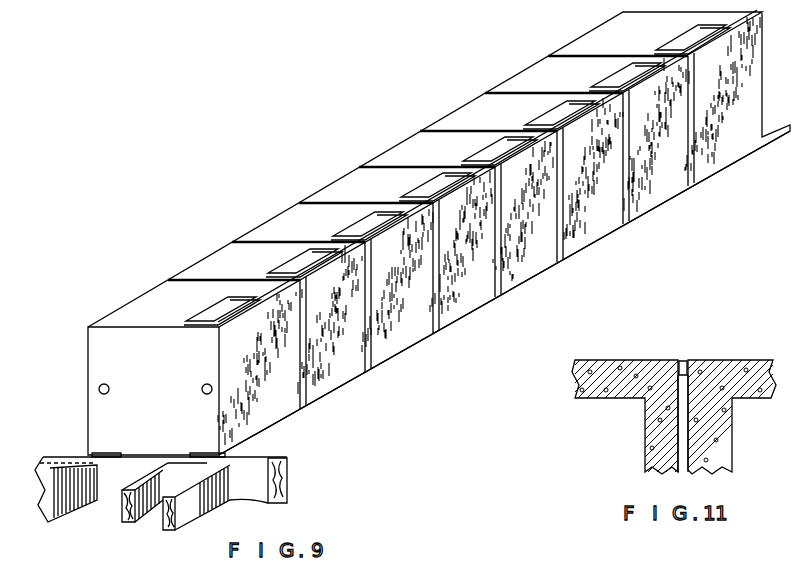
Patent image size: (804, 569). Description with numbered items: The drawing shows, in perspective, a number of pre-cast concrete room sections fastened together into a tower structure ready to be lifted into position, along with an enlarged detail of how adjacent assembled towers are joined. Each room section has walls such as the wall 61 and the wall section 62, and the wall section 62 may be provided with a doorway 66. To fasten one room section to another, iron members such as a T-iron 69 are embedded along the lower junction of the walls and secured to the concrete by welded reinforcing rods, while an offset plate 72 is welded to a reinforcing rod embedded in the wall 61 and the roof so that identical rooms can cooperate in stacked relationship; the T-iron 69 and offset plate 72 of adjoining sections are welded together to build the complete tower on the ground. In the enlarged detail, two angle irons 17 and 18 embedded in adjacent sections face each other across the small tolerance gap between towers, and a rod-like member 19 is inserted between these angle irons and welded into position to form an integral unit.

In FIG. 9, the wall 61 is at (350, 353).
In FIG. 9, the wall section 62 is at (232, 258).
In FIG. 9, the doorway 66 is at (360, 224).
In FIG. 9, the T-iron 69 is at (303, 392).
In FIG. 9, the offset plate 72 is at (297, 412).
In FIG. 11, the angle iron 17 is at (700, 362).
In FIG. 11, the angle iron 18 is at (673, 360).
In FIG. 11, the rod-like member 19 is at (683, 358).